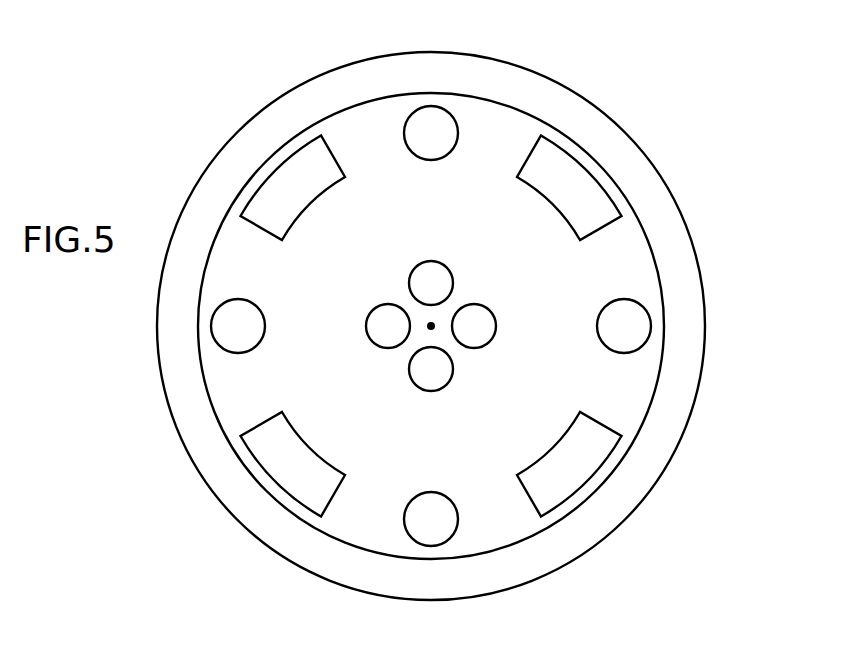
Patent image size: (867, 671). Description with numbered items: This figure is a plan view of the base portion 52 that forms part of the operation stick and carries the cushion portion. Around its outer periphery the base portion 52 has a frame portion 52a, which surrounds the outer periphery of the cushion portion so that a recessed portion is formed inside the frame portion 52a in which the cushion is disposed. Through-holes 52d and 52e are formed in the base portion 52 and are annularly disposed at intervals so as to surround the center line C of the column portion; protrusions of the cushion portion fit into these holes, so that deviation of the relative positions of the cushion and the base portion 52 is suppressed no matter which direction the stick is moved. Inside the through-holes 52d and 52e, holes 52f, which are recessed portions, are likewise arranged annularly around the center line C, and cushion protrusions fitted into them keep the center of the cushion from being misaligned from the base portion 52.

The base portion 52 is at (633, 247).
The frame portion 52a is at (693, 277).
The through-holes 52d is at (434, 118).
The through-holes 52e is at (277, 175).
The holes (recessed portions) 52f is at (430, 270).
The center line C is at (427, 333).